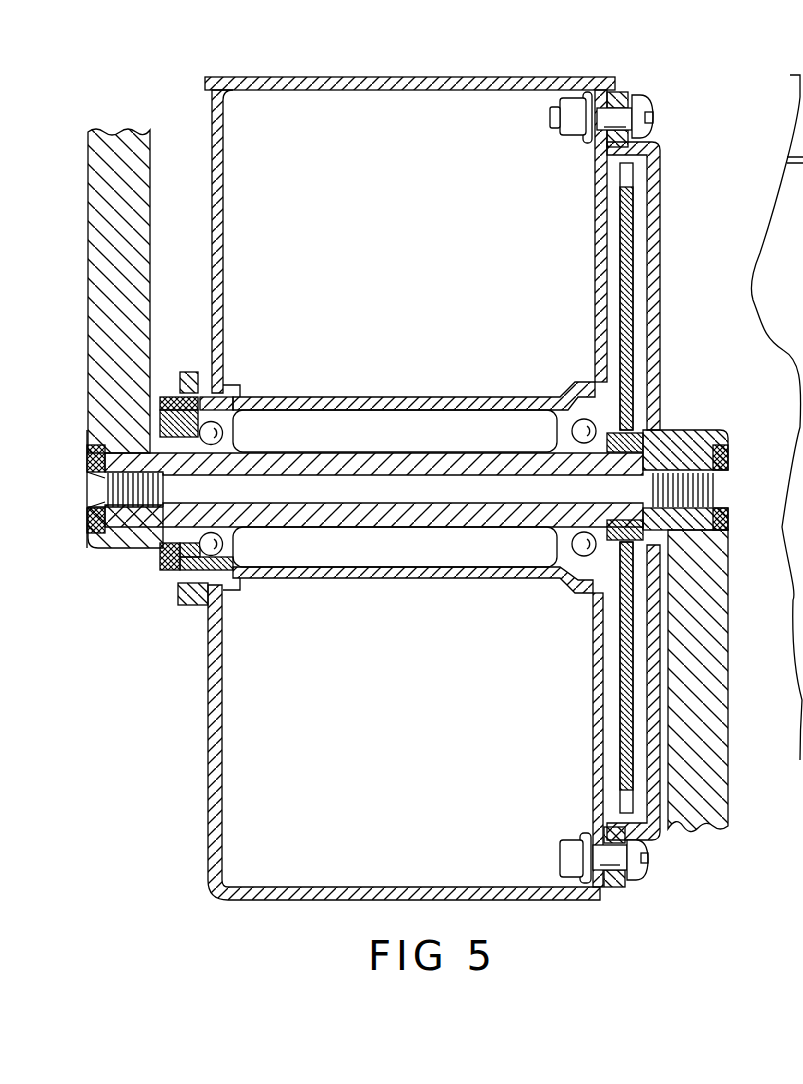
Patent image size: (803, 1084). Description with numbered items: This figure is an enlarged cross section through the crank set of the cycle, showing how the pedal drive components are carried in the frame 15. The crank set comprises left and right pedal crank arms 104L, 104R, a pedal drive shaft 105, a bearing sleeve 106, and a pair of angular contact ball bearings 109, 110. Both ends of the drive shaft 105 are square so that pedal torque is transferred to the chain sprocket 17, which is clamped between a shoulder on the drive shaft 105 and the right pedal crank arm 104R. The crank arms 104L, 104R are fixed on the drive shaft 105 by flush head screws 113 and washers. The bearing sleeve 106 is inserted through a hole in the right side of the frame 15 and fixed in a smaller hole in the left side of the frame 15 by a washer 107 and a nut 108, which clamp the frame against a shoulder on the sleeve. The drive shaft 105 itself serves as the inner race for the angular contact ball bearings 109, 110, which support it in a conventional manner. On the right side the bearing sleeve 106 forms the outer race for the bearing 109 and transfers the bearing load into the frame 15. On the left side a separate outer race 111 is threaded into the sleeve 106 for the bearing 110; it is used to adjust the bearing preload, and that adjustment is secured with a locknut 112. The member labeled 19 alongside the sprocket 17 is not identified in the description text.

The frame 15 is at (226, 208).
The chain sprocket 17 is at (635, 230).
The bracket 19 is at (662, 172).
The left pedal crank arm 104L is at (150, 223).
The right pedal crank arm 104R is at (728, 793).
The pedal drive shaft 105 is at (365, 456).
The bearing sleeve 106 is at (410, 397).
The washer 107 is at (198, 373).
The nut 108 is at (180, 373).
The angular contact ball bearing 109 is at (567, 426).
The angular contact ball bearing 110 is at (223, 432).
The outer race 111 is at (233, 413).
The locknut 112 is at (157, 560).
The flush head screw 113 is at (728, 488).